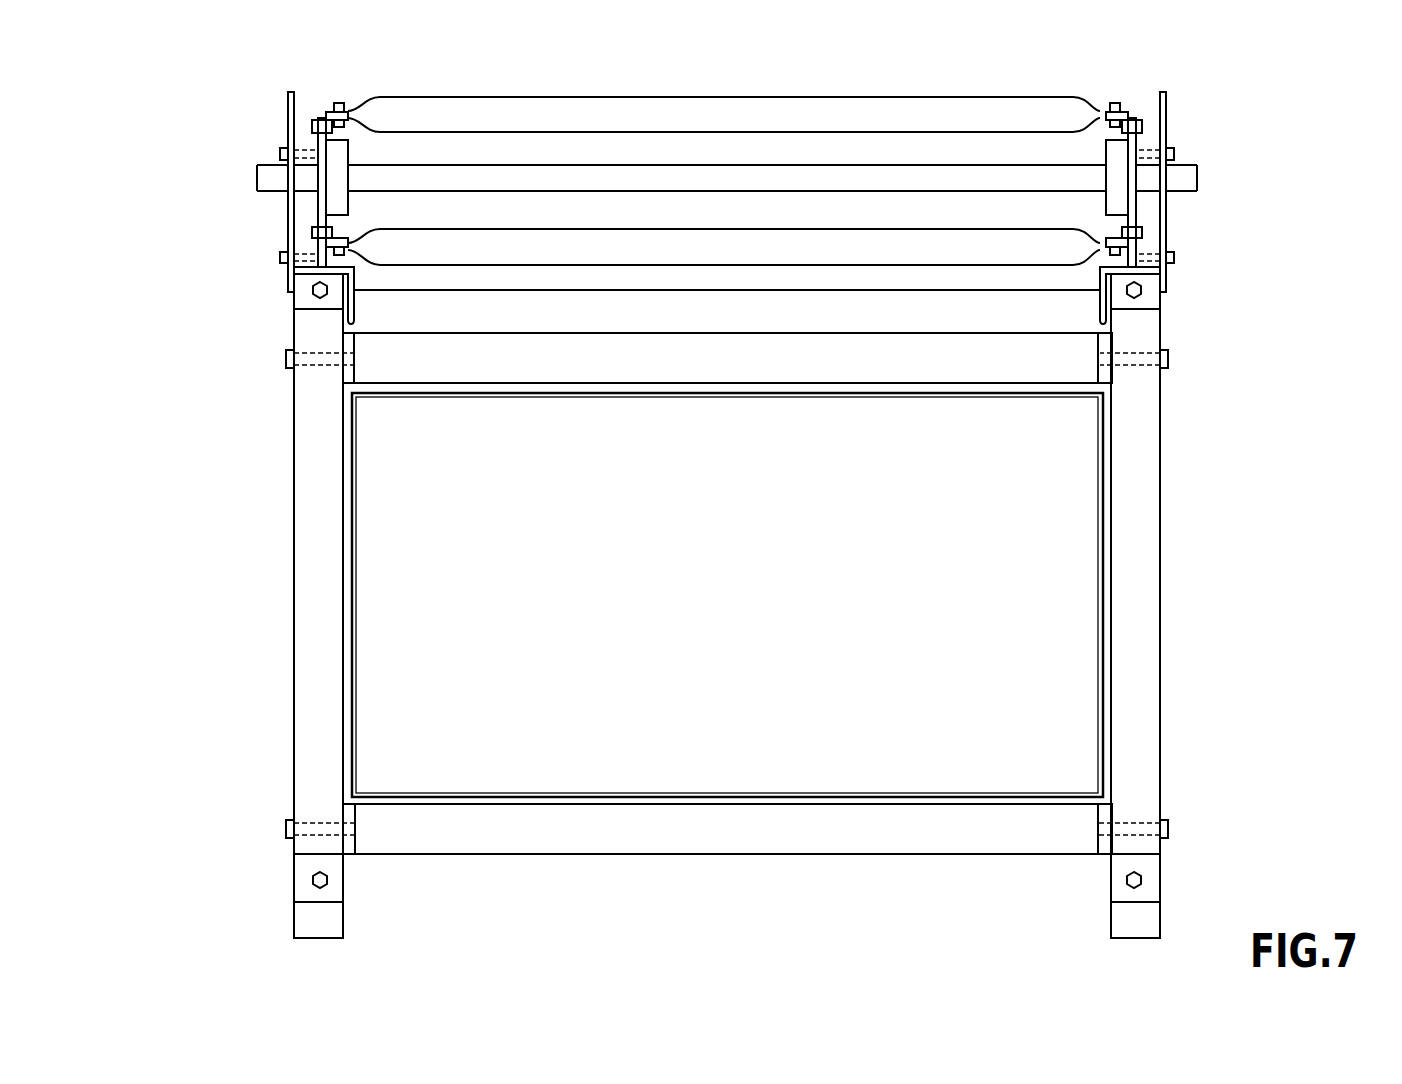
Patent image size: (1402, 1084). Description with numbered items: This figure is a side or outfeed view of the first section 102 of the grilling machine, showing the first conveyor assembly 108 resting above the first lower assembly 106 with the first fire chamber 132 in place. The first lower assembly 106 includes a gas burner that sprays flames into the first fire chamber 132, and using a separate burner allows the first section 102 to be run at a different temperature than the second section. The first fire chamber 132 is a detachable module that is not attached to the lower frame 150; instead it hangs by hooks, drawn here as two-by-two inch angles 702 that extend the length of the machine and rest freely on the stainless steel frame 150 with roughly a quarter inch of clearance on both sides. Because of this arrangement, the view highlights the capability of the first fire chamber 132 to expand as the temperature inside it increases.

The first section of the grilling machine 102 is at (682, 521).
The first lower assembly 106 is at (682, 601).
The first conveyor assembly 108 is at (186, 88).
The first fire chamber 132 is at (985, 308).
The first lower frame 150 is at (320, 738).
The angles 702 is at (310, 268).